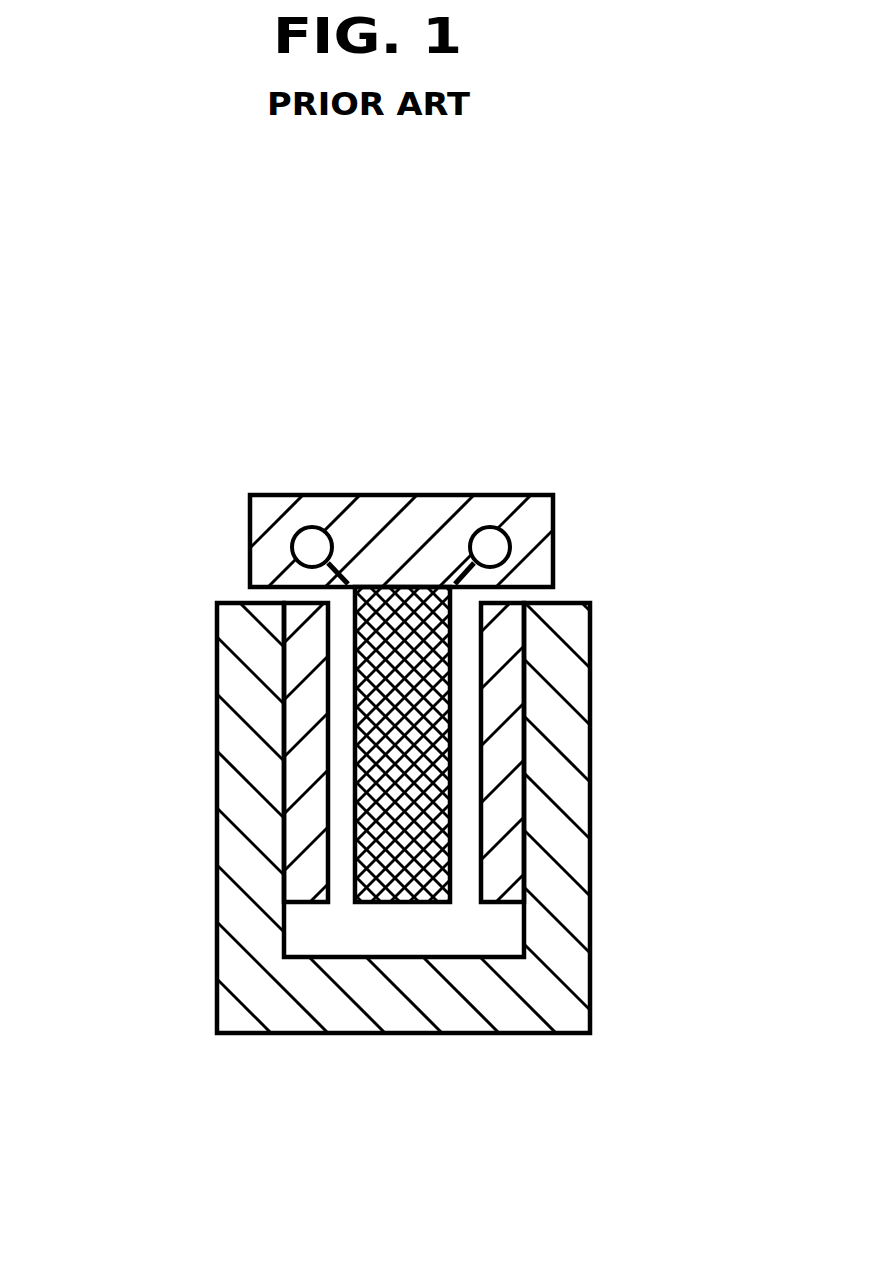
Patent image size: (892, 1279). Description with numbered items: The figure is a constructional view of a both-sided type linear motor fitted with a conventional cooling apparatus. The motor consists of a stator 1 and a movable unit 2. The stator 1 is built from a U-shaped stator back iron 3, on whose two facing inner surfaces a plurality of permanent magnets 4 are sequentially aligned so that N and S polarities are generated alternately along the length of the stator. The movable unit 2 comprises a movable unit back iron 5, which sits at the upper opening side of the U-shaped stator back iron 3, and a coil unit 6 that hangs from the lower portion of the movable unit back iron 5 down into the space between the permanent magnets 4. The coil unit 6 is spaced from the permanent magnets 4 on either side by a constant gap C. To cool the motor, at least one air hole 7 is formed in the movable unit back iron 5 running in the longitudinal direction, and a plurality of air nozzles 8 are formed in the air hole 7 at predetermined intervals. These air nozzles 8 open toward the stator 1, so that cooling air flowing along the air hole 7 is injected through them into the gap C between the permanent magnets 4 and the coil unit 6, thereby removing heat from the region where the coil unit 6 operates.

The stator 1 is at (446, 860).
The movable unit 2 is at (402, 494).
The stator back iron 3 is at (565, 898).
The permanent magnets 4 is at (300, 800).
The movable unit back iron 5 is at (417, 523).
The coil unit 6 is at (410, 873).
The air hole 7 is at (303, 547).
The air nozzles 8 is at (345, 590).
The gap C is at (340, 718).